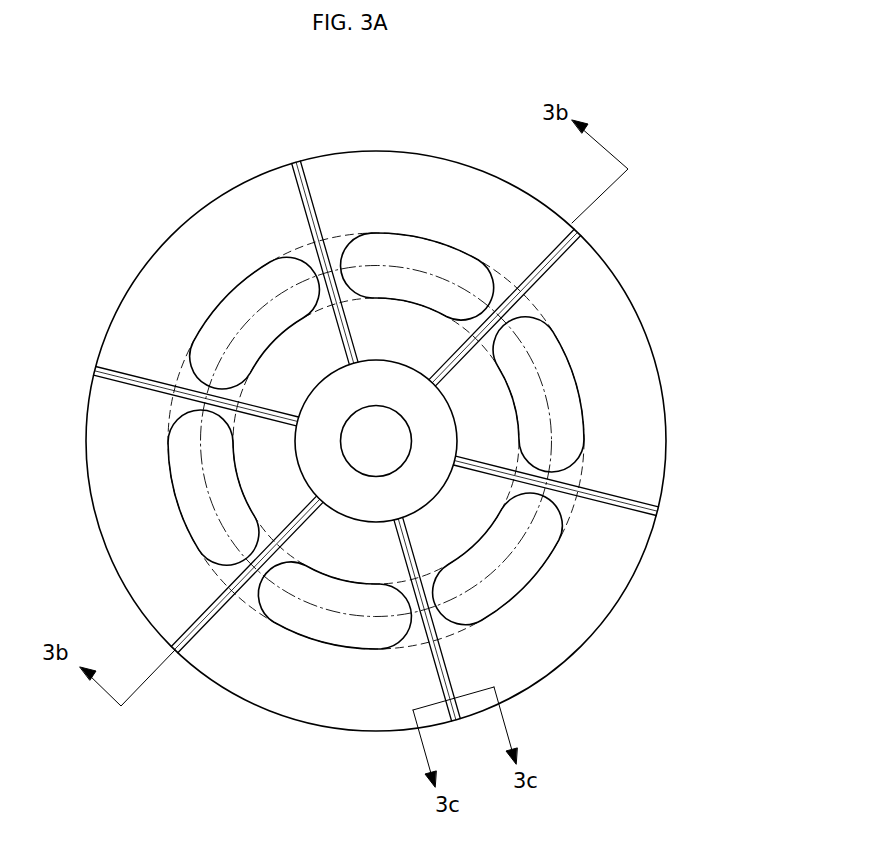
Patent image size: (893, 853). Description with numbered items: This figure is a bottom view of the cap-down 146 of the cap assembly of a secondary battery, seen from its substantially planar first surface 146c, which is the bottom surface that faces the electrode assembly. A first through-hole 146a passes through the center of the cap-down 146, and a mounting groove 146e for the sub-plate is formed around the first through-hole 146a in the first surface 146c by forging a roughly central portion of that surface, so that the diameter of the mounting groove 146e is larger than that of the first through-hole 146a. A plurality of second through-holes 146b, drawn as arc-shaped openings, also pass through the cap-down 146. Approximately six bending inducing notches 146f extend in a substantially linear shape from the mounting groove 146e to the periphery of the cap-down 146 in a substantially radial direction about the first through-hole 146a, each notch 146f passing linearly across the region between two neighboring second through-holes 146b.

The cap-down 146 is at (107, 190).
The first through-hole 146a is at (397, 430).
The second through-holes 146b is at (570, 420).
The first surface 146c is at (595, 593).
The mounting groove 146e is at (361, 502).
The bending inducing notches 146f is at (623, 490).